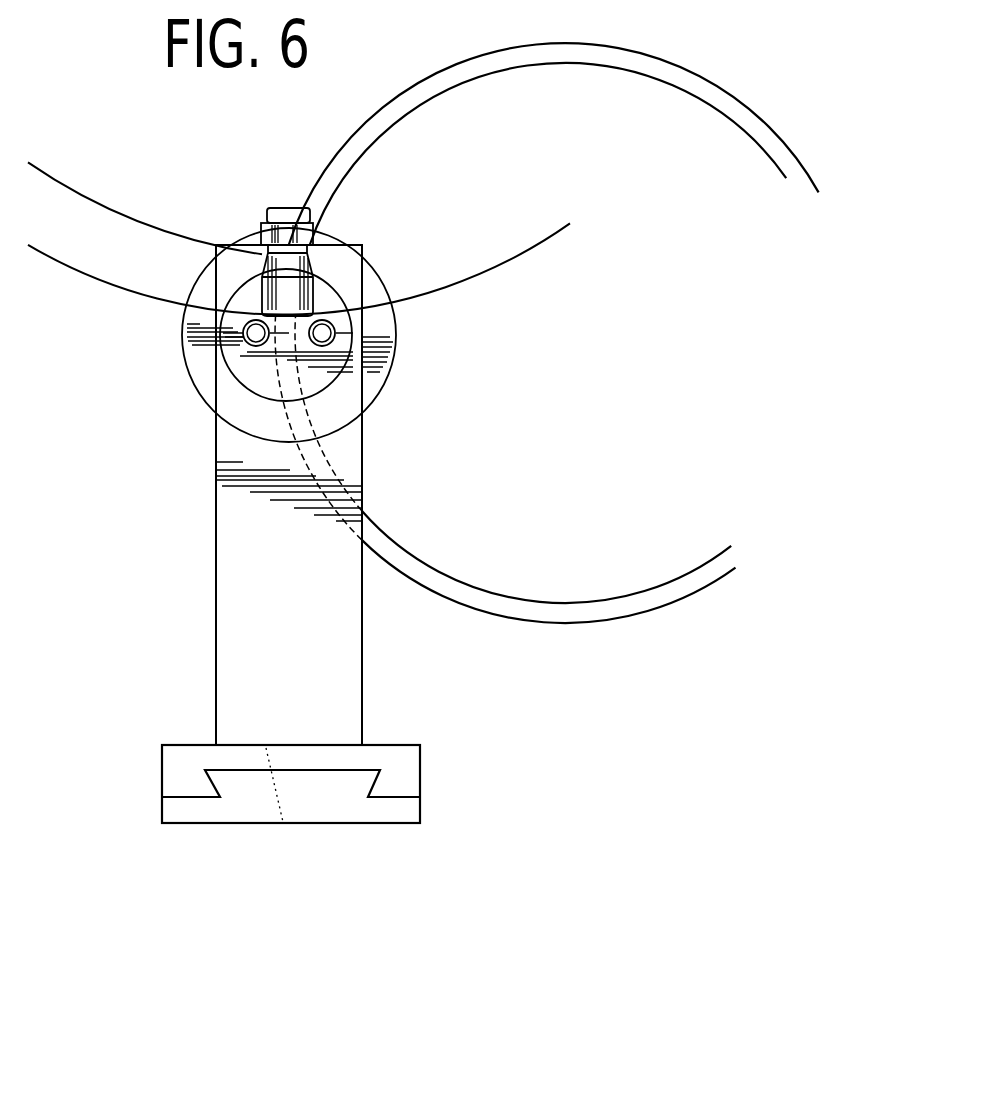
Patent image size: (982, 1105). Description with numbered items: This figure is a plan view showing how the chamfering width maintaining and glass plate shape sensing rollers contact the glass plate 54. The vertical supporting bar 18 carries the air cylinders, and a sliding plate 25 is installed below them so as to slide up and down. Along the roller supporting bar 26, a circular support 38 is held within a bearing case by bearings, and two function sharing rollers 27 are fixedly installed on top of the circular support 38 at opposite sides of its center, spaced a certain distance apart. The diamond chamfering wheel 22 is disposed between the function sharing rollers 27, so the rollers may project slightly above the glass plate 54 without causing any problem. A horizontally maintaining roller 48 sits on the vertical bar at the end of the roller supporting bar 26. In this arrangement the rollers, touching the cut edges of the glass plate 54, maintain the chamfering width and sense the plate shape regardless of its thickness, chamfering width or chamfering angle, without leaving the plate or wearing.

The vertical supporting bar 18 is at (410, 787).
The diamond chamfering wheel 22 is at (656, 603).
The sliding plate 25 is at (283, 823).
The roller supporting bar 26 is at (226, 612).
The function sharing roller 27 is at (253, 333).
The circular support 38 is at (250, 390).
The horizontally maintaining roller 48 is at (263, 293).
The glass plate 54 is at (100, 278).